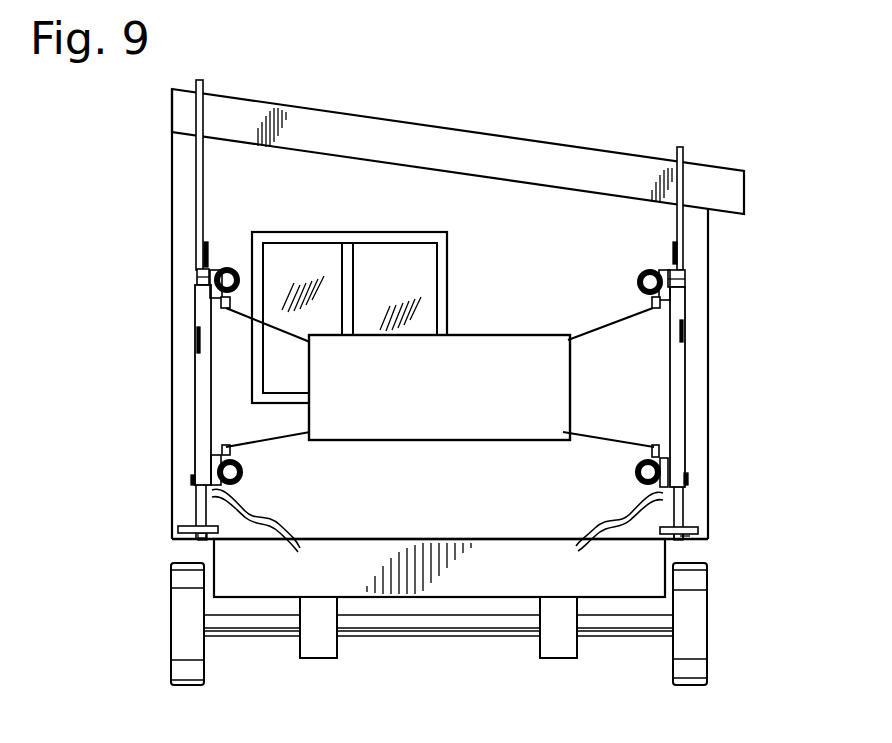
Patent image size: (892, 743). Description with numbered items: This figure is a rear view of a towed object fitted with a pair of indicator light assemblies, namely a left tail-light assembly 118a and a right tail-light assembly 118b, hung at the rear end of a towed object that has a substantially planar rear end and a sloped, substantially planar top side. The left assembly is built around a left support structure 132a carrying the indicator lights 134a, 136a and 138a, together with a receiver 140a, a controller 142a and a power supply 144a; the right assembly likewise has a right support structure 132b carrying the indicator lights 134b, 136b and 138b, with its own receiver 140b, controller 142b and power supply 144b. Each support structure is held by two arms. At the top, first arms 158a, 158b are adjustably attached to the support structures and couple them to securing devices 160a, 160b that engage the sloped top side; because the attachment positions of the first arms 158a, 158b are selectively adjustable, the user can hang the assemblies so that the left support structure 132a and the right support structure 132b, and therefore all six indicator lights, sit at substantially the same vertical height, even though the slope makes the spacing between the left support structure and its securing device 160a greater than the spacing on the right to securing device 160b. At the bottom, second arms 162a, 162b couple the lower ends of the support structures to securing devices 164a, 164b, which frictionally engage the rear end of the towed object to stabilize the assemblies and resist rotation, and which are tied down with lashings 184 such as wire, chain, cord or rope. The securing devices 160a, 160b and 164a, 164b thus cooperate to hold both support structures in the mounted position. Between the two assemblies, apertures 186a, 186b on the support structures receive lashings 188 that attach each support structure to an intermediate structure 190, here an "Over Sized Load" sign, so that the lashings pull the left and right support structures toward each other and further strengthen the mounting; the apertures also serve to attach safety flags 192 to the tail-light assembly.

The left tail-light assembly 118a is at (72, 336).
The right tail-light assembly 118b is at (777, 390).
The left support structure 132a is at (195, 313).
The right support structure 132b is at (687, 310).
The indicator light 134a is at (192, 482).
The indicator light 134b is at (687, 480).
The indicator light 136a is at (242, 478).
The indicator light 136b is at (640, 470).
The indicator light 138a is at (232, 278).
The indicator light 138b is at (647, 280).
The receiver 140a is at (205, 256).
The receiver 140b is at (678, 258).
The controller 142a is at (195, 271).
The controller 142b is at (687, 273).
The power supply 144a is at (195, 280).
The power supply 144b is at (687, 282).
The first arm 158a is at (190, 157).
The first arm 158b is at (690, 190).
The securing device 160a is at (200, 78).
The securing device 160b is at (680, 143).
The second arm 162a is at (188, 512).
The second arm 162b is at (687, 512).
The securing device 164a is at (177, 529).
The securing device 164b is at (702, 530).
The lashing 184 is at (198, 538).
The aperture 186a is at (226, 447).
The aperture 186b is at (655, 308).
The lashing 188 is at (288, 433).
The intermediate structure 190 is at (478, 335).
The safety flag 192 is at (305, 551).